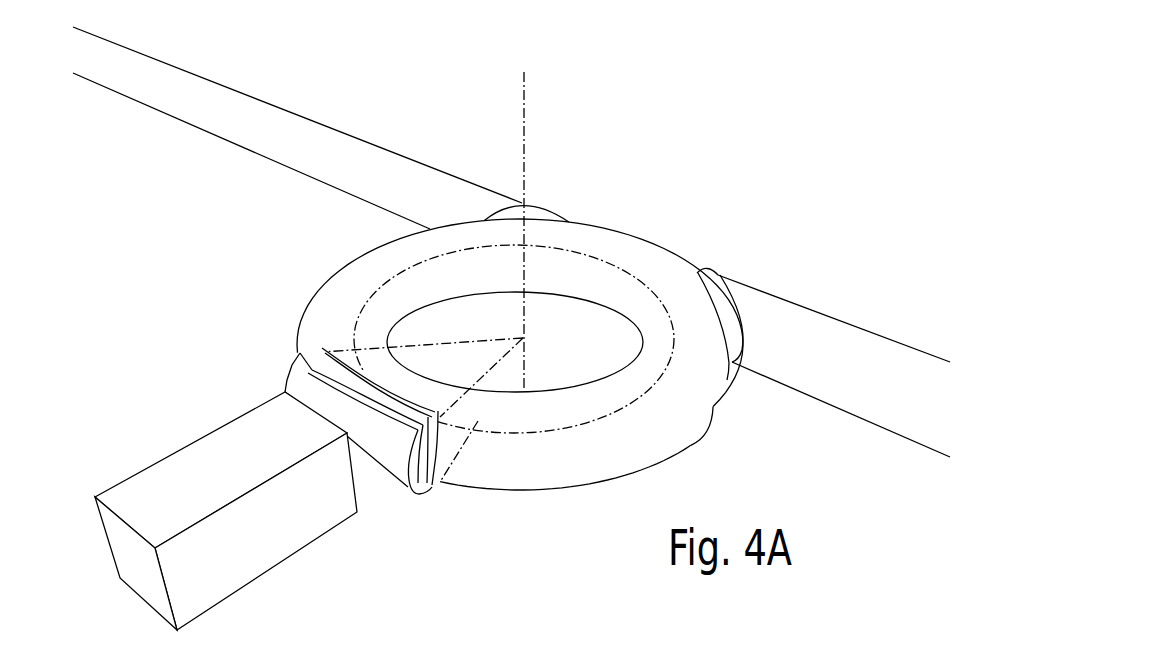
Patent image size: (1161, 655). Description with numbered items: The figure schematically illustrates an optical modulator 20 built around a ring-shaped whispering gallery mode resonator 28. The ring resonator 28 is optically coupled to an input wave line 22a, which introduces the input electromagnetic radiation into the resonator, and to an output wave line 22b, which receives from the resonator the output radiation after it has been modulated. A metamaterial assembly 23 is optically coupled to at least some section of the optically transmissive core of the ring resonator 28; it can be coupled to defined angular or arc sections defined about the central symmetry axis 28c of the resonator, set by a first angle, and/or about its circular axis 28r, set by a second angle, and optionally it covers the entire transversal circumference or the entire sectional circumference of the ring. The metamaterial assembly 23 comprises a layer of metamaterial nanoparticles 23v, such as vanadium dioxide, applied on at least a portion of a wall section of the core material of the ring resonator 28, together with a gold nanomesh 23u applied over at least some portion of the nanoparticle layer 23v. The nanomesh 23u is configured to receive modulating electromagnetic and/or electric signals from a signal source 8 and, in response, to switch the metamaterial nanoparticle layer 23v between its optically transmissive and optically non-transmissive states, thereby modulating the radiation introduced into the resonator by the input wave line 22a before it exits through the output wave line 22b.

The drive block 8 is at (213, 457).
The rotor assembly 20 is at (554, 322).
The first shaft section 22a is at (390, 148).
The second shaft section 22b is at (793, 303).
The bracket with slot 23 is at (277, 361).
The slot lower wall 23u is at (422, 492).
The slot upper wall 23v is at (433, 490).
The ring 28 is at (505, 322).
The ring center axis 28c is at (526, 155).
The ring pitch radius 28r is at (653, 388).